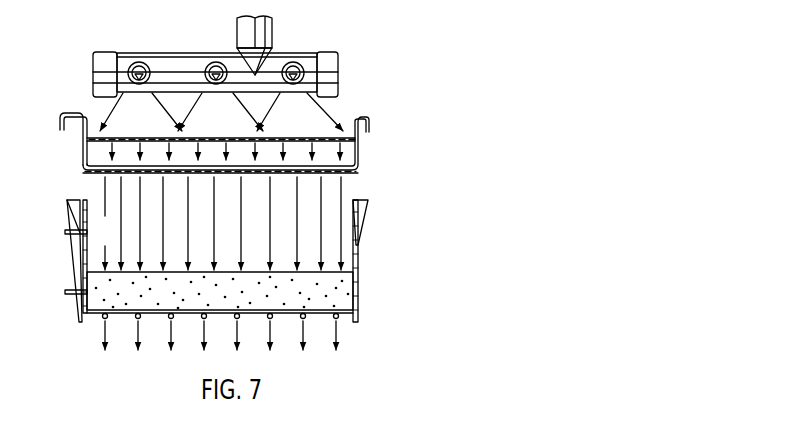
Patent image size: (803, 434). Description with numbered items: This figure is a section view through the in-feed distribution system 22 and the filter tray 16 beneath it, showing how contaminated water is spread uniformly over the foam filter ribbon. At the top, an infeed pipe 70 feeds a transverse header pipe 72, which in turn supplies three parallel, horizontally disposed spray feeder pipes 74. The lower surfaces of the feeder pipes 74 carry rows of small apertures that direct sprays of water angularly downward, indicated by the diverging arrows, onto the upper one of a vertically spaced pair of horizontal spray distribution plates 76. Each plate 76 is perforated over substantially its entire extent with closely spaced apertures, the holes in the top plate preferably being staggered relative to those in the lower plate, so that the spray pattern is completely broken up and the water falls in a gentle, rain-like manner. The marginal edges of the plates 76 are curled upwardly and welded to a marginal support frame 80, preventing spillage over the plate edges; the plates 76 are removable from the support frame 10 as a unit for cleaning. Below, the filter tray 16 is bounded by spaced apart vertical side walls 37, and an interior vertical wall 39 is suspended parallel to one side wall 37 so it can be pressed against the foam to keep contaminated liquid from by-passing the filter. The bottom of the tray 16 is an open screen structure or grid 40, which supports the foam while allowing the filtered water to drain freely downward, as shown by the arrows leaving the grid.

The support frame 10 is at (369, 125).
The filter tray 16 is at (242, 280).
The in-feed distribution system 22 is at (281, 73).
The vertical side walls 37 is at (78, 252).
The interior vertical wall 39 is at (86, 243).
The open screen structure or grid 40 is at (103, 320).
The infeed pipe 70 is at (273, 30).
The header pipe 72 is at (140, 55).
The spray feeder pipes 74 is at (205, 71).
The spray distribution plates 76 is at (312, 137).
The marginal support frame 80 is at (236, 143).